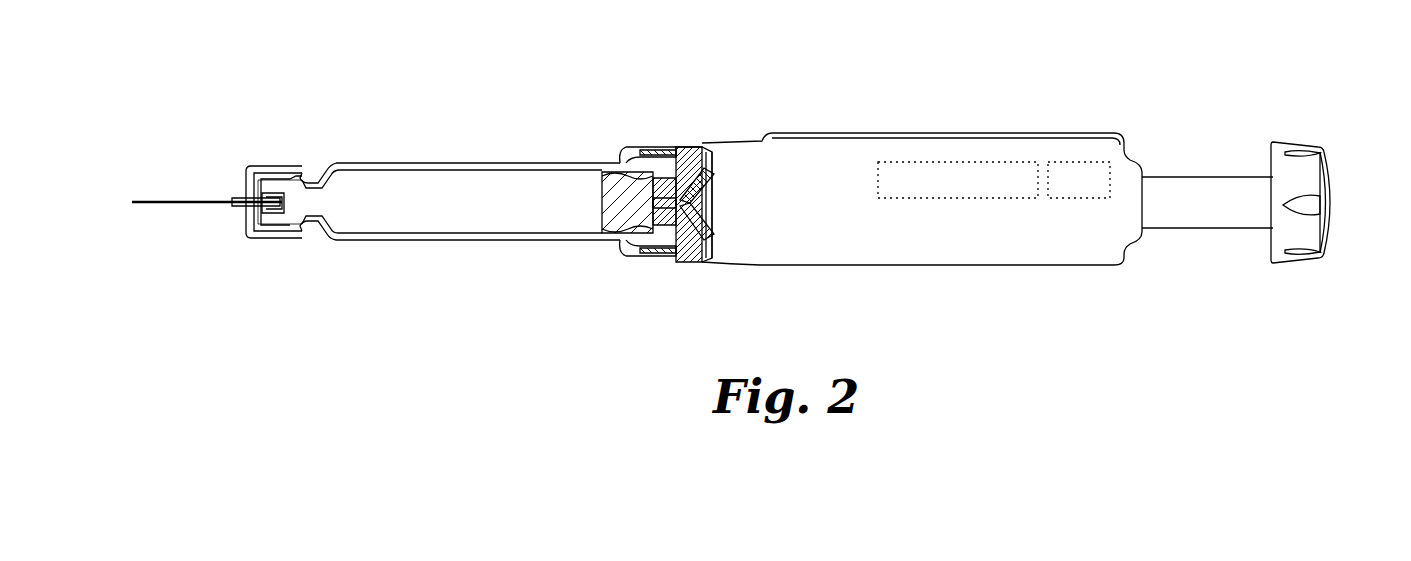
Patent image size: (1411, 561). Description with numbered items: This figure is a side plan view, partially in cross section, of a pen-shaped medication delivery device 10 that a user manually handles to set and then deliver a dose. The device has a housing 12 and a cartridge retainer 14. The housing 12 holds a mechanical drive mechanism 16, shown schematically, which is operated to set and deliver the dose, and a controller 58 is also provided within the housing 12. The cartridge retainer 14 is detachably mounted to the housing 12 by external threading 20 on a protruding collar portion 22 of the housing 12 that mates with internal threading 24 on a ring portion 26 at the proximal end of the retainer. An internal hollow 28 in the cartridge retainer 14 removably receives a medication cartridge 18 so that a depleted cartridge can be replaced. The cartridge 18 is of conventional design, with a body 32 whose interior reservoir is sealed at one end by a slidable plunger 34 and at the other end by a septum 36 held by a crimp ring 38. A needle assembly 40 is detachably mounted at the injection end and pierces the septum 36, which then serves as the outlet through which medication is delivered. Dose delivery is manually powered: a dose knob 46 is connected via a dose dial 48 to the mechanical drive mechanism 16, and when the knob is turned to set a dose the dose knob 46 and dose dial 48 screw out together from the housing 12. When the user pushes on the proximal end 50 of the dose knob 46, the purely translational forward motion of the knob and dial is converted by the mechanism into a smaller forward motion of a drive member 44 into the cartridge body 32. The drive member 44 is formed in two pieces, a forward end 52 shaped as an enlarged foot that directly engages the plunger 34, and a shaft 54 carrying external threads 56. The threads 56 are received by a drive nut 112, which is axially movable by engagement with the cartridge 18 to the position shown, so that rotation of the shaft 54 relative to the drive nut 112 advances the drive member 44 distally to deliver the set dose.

The medication delivery device 10 is at (902, 92).
The housing 12 is at (1060, 246).
The cartridge retainer 14 is at (432, 135).
The mechanical drive mechanism 16 is at (990, 160).
The cartridge 18 is at (495, 241).
The external threading 20 is at (636, 143).
The protruding collar portion 22 is at (667, 148).
The internal threading 24 is at (670, 262).
The ring portion 26 is at (635, 262).
The internal hollow 28 is at (298, 170).
The body 32 is at (378, 163).
The plunger 34 is at (602, 190).
The septum 36 is at (279, 204).
The crimp ring 38 is at (272, 238).
The needle assembly 40 is at (253, 166).
The drive member 44 is at (703, 262).
The dose knob 46 is at (1313, 172).
The dose dial 48 is at (1200, 215).
The proximal end 50 is at (1333, 218).
The forward end 52 is at (716, 160).
The shaft 54 is at (711, 208).
The external threads 56 is at (714, 180).
The controller 58 is at (1080, 160).
The drive nut 112 is at (692, 147).